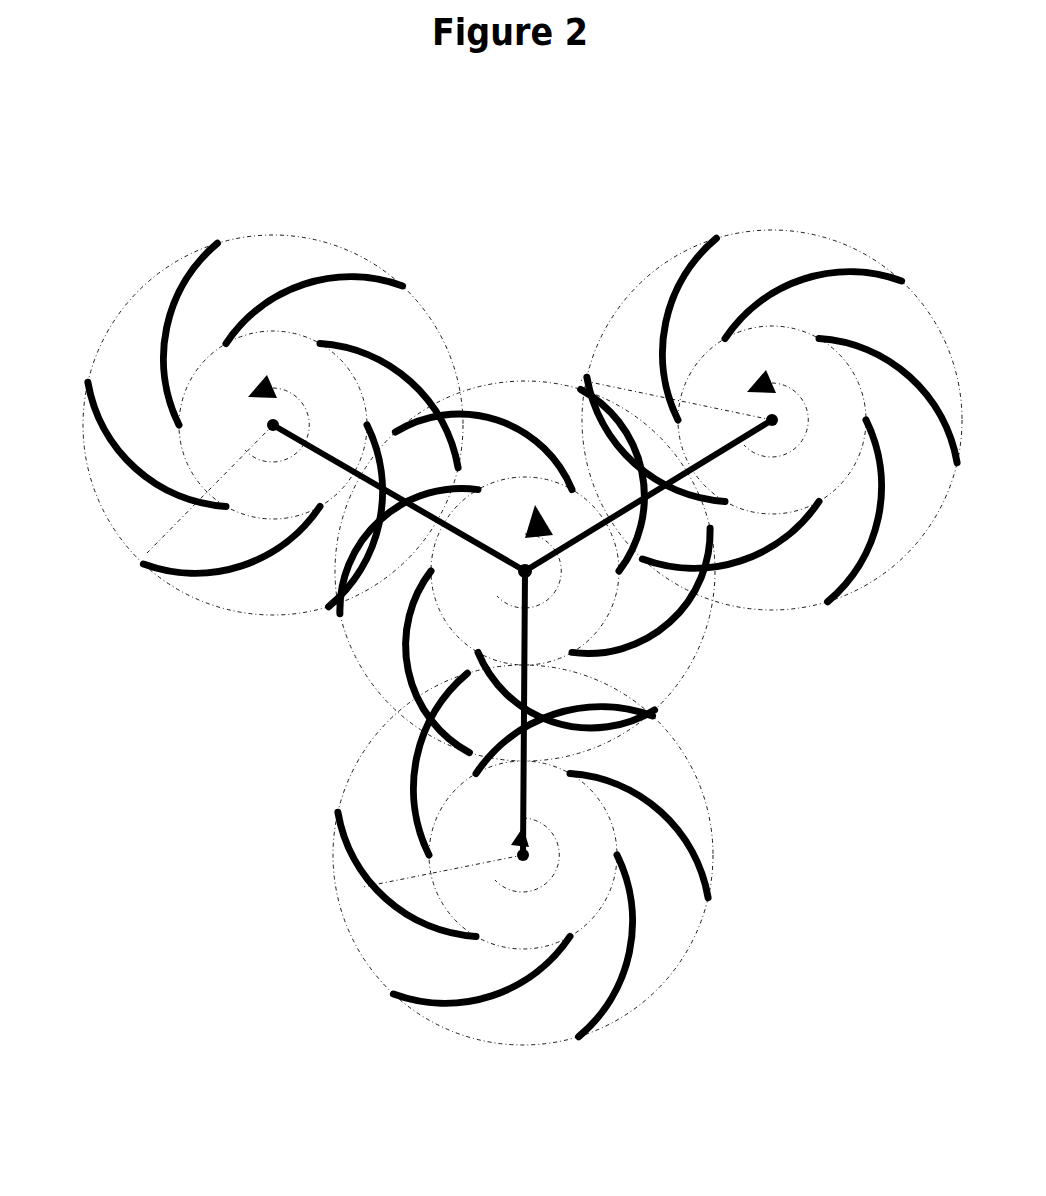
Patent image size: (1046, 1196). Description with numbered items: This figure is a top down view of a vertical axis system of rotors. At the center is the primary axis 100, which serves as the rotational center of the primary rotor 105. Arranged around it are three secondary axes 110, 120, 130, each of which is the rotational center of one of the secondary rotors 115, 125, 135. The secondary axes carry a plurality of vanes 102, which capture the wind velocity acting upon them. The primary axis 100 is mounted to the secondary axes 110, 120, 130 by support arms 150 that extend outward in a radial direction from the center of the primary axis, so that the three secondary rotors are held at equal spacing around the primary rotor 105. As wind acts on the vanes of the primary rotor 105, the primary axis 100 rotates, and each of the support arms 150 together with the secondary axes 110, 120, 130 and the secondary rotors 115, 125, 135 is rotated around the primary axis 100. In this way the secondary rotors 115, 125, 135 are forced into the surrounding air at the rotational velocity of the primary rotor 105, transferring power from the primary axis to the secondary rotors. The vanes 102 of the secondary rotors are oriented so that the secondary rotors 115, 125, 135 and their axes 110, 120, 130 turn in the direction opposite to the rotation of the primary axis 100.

The primary axis 100 is at (525, 571).
The vanes 102 is at (335, 268).
The primary rotor 105 is at (695, 666).
The secondary axis 110 is at (147, 553).
The secondary rotor 115 is at (160, 272).
The secondary axis 120 is at (363, 887).
The secondary rotor 125 is at (357, 943).
The secondary axis 130 is at (640, 405).
The secondary rotor 135 is at (650, 272).
The support arms 150 is at (641, 557).